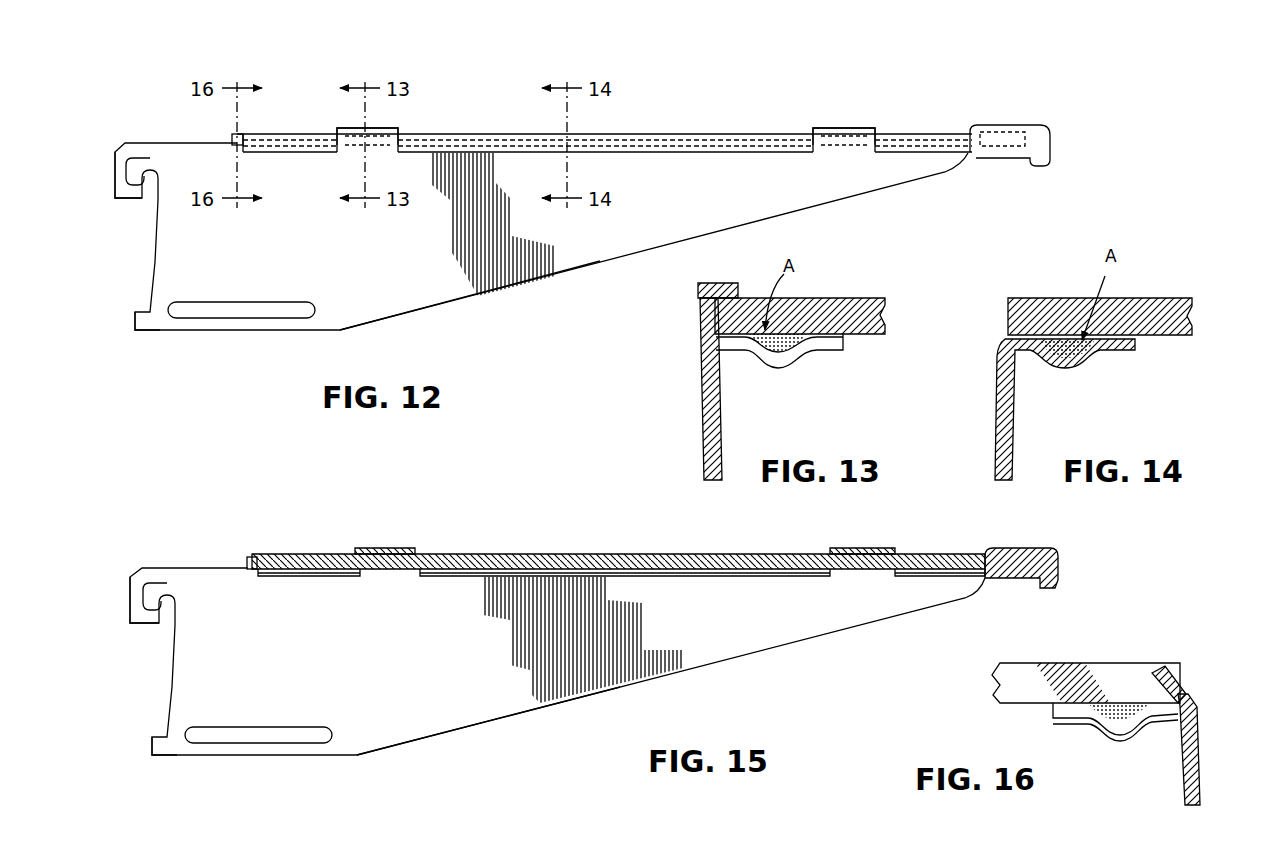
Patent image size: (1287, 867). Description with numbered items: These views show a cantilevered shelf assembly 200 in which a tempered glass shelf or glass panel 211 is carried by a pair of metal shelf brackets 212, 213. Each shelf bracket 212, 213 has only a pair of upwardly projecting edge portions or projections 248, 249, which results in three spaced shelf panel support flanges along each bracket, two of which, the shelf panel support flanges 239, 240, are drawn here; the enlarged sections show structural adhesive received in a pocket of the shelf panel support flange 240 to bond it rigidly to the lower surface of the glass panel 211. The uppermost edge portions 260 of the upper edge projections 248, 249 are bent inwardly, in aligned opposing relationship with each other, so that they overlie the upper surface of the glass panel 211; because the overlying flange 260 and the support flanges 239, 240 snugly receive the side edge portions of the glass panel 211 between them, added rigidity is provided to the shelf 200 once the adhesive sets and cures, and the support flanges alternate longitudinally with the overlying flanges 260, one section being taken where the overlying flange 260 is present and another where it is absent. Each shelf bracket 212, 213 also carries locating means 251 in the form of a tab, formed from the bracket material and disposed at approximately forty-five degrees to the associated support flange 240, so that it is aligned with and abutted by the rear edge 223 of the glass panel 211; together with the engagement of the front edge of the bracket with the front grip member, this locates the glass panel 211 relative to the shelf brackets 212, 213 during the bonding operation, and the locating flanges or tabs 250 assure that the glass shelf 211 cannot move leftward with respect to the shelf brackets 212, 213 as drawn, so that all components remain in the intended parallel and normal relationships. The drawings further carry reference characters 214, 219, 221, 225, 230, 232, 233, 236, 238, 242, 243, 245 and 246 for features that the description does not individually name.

In FIG. 12, the shelf assembly 200 is at (825, 50).
In FIG. 13, the shelf assembly 200 is at (892, 254).
In FIG. 14, the shelf assembly 200 is at (1165, 232).
In FIG. 15, the shelf assembly 200 is at (578, 512).
In FIG. 12, the glass panel 211 is at (742, 132).
In FIG. 13, the glass panel 211 is at (892, 312).
In FIG. 14, the glass panel 211 is at (1143, 296).
In FIG. 15, the glass panel 211 is at (468, 552).
In FIG. 16, the glass panel 211 is at (1050, 655).
In FIG. 12, the shelf bracket 212 is at (420, 305).
In FIG. 13, the shelf bracket 212 is at (685, 405).
In FIG. 14, the shelf bracket 212 is at (990, 410).
In FIG. 16, the shelf bracket 212 is at (1202, 762).
In FIG. 15, the shelf bracket 213 is at (436, 740).
In FIG. 12, the end cap 214 is at (1040, 126).
In FIG. 12, the edge of panel 219 is at (640, 134).
In FIG. 13, the edge of panel 219 is at (713, 312).
In FIG. 14, the edge of panel 219 is at (1008, 317).
In FIG. 15, the panel upper surface 221 is at (280, 552).
In FIG. 12, the rear edge 223 is at (235, 136).
In FIG. 15, the rear edge 223 is at (257, 575).
In FIG. 16, the rear edge 223 is at (1115, 672).
In FIG. 13, the panel lower surface 225 is at (870, 334).
In FIG. 13, the bracket flange 230 is at (722, 448).
In FIG. 14, the bracket flange 230 is at (1010, 452).
In FIG. 12, the bracket 232 is at (205, 252).
In FIG. 15, the bracket 233 is at (245, 683).
In FIG. 12, the hook 236 is at (115, 158).
In FIG. 15, the hook 236 is at (130, 578).
In FIG. 12, the bracket bottom tab 238 is at (133, 330).
In FIG. 15, the bracket bottom tab 238 is at (150, 755).
In FIG. 12, the shelf panel support flange 239 is at (278, 155).
In FIG. 15, the shelf panel support flange 239 is at (302, 578).
In FIG. 12, the shelf panel support flange 240 is at (718, 155).
In FIG. 13, the shelf panel support flange 240 is at (842, 358).
In FIG. 14, the shelf panel support flange 240 is at (1102, 382).
In FIG. 15, the shelf panel support flange 240 is at (705, 578).
In FIG. 16, the shelf panel support flange 240 is at (1115, 740).
In FIG. 13, the strip flat portion 242 is at (732, 352).
In FIG. 13, the strip flat portion 243 is at (822, 352).
In FIG. 13, the strip channel 245 is at (790, 368).
In FIG. 12, the adhesive 246 is at (263, 134).
In FIG. 13, the adhesive 246 is at (785, 330).
In FIG. 14, the adhesive 246 is at (1055, 340).
In FIG. 12, the upwardly projecting edge portion 248 is at (842, 150).
In FIG. 15, the upwardly projecting edge portion 248 is at (863, 578).
In FIG. 12, the upwardly projecting edge portion 249 is at (398, 134).
In FIG. 13, the upwardly projecting edge portion 249 is at (698, 296).
In FIG. 15, the upwardly projecting edge portion 249 is at (384, 570).
In FIG. 12, the locating flange 250 is at (978, 158).
In FIG. 15, the locating flange 250 is at (990, 582).
In FIG. 12, the locating means 251 is at (228, 134).
In FIG. 15, the locating means 251 is at (245, 554).
In FIG. 16, the locating means 251 is at (1175, 664).
In FIG. 12, the uppermost edge portion 260 is at (388, 127).
In FIG. 13, the uppermost edge portion 260 is at (713, 297).
In FIG. 15, the uppermost edge portion 260 is at (372, 547).